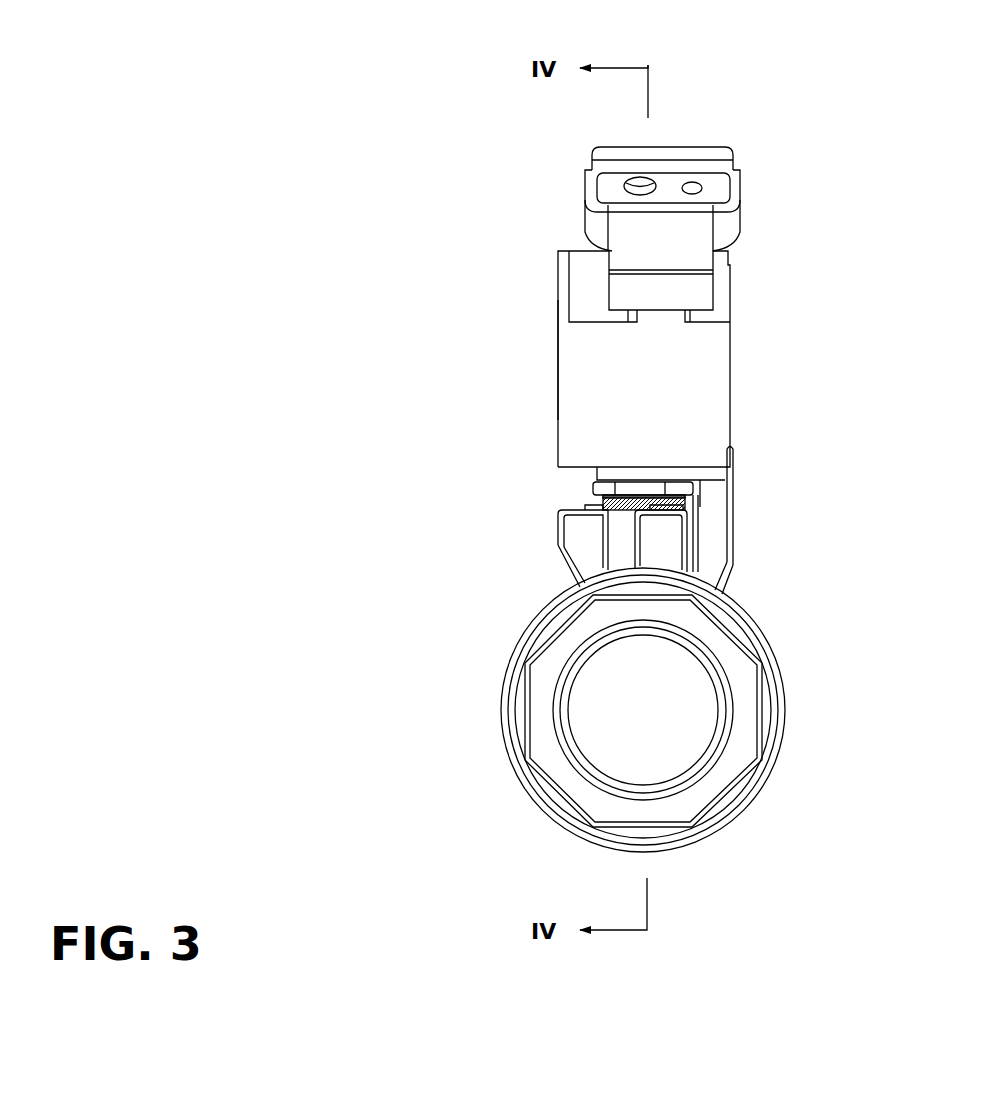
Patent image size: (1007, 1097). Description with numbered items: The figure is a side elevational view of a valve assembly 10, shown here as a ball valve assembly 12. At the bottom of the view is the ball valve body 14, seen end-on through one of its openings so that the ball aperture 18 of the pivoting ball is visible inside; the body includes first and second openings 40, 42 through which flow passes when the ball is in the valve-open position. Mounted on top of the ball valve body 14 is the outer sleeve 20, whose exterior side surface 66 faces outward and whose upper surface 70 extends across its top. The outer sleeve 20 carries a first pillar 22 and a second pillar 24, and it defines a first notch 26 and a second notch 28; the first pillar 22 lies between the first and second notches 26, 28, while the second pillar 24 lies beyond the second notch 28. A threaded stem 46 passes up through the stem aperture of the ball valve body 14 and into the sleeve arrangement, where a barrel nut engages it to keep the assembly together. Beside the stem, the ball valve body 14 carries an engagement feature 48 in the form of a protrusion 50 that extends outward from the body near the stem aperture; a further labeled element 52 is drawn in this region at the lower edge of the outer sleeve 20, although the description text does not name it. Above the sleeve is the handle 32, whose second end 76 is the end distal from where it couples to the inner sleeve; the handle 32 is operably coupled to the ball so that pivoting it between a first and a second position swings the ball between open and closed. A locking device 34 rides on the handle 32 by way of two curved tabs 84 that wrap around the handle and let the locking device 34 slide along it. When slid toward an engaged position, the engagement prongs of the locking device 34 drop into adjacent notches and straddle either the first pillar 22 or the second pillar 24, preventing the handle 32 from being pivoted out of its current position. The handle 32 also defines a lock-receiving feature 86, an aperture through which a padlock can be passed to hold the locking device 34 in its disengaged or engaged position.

The valve assembly 10 is at (844, 188).
The ball valve assembly 12 is at (905, 197).
The ball valve body 14 is at (650, 730).
The ball aperture 18 is at (601, 736).
The outer sleeve 20 is at (635, 279).
The first pillar 22 is at (655, 313).
The second pillar 24 is at (562, 265).
The first notch 26 is at (733, 305).
The second notch 28 is at (590, 291).
The handle 32 is at (633, 145).
The locking device 34 is at (693, 298).
The first opening 40 is at (677, 738).
The second opening 42 is at (680, 687).
The threaded stem 46 is at (598, 497).
The engagement feature 48 is at (735, 480).
The protrusion 50 is at (718, 490).
The flange 52 is at (703, 462).
The exterior side surface 66 is at (558, 348).
The upper surface 70 is at (573, 248).
The second end 76 is at (672, 148).
The curved tabs 84 is at (592, 180).
The lock-receiving feature 86 is at (622, 189).